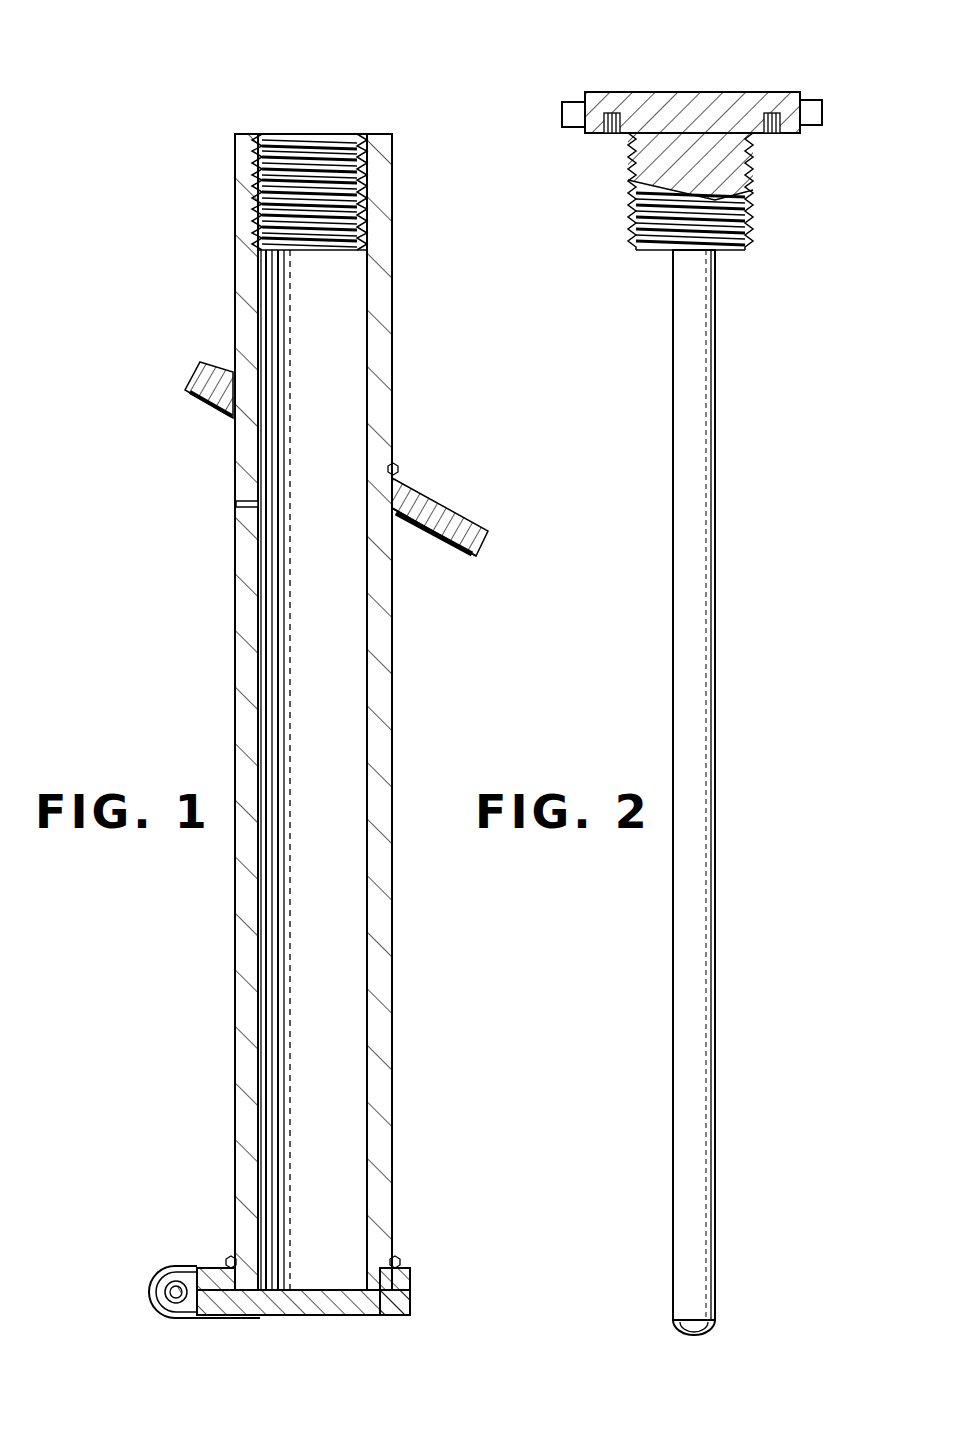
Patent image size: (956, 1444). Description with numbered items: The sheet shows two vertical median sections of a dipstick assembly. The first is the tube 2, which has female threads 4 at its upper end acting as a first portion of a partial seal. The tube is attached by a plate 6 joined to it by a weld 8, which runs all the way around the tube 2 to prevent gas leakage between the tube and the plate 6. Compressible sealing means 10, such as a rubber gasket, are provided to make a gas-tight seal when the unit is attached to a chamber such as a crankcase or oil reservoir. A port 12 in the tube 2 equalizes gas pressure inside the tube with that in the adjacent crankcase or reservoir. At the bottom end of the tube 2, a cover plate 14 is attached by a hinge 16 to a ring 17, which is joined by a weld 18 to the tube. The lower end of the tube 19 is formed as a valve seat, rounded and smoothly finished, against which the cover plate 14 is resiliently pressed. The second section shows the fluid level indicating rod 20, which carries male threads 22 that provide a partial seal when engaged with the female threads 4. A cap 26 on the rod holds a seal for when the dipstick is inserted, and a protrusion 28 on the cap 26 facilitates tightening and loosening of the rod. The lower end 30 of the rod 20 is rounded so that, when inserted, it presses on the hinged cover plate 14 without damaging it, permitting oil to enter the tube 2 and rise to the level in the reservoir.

In FIG. 1, the tube 2 is at (212, 666).
In FIG. 1, the female threads 4 is at (326, 150).
In FIG. 1, the plate 6 is at (455, 520).
In FIG. 1, the weld 8 is at (397, 470).
In FIG. 1, the compressible sealing means 10 is at (430, 535).
In FIG. 1, the port 12 is at (237, 505).
In FIG. 1, the cover plate 14 is at (322, 1310).
In FIG. 1, the hinge 16 is at (157, 1297).
In FIG. 1, the ring 17 is at (212, 1272).
In FIG. 1, the weld 18 is at (430, 1232).
In FIG. 1, the lower end of the tube 19 is at (380, 1312).
In FIG. 2, the fluid level indicating rod 20 is at (736, 517).
In FIG. 2, the male threads 22 is at (752, 186).
In FIG. 2, the cap 26 is at (695, 100).
In FIG. 2, the protrusion 28 is at (573, 110).
In FIG. 2, the lower end of the indicating rod 30 is at (683, 1325).